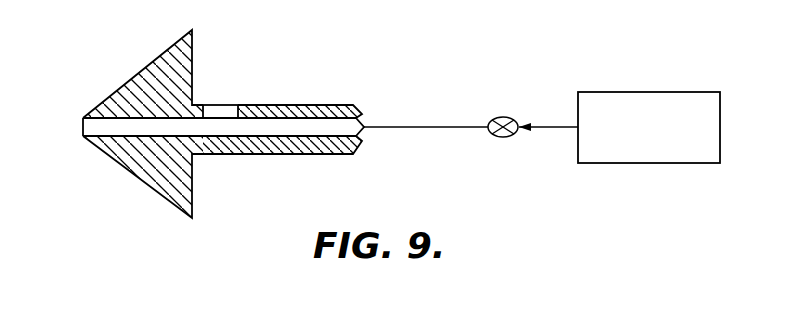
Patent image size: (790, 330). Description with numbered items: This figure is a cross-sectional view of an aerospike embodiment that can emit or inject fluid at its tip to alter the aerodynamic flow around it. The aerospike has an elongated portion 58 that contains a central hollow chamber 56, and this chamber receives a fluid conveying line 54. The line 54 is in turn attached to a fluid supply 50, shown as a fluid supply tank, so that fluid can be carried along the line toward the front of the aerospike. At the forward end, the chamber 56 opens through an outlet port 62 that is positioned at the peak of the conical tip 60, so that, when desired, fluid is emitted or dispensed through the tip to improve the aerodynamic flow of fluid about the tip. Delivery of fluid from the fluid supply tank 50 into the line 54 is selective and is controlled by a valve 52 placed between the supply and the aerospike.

The fluid supply 50 is at (662, 92).
The valve 52 is at (513, 120).
The fluid conveying line 54 is at (388, 128).
The central hollow chamber 56 is at (302, 130).
The elongated portion 58 is at (302, 104).
The conical tip 60 is at (138, 78).
The outlet port 62 is at (223, 104).